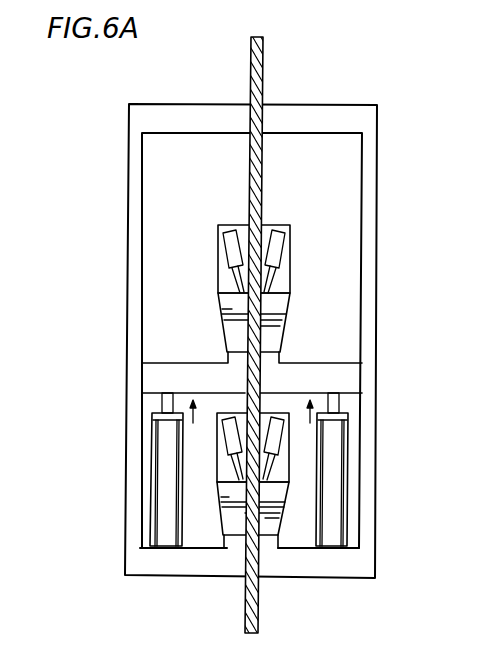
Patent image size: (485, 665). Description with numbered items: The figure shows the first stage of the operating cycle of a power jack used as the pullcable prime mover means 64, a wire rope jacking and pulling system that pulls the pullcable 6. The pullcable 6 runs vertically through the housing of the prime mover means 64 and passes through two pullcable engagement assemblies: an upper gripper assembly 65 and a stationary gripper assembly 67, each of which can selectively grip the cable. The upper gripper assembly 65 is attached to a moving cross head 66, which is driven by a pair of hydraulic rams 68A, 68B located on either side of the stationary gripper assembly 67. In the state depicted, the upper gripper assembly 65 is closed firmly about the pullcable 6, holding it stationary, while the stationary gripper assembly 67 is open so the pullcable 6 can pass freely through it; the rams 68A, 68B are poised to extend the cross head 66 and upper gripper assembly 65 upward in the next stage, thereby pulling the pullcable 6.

The pullcable 6 is at (263, 63).
The pullcable prime mover means 64 is at (380, 137).
The upper gripper assembly 65 is at (220, 225).
The moving cross head 66 is at (348, 378).
The stationary gripper assembly 67 is at (227, 512).
The hydraulic ram 68A is at (152, 500).
The hydraulic ram 68B is at (348, 497).